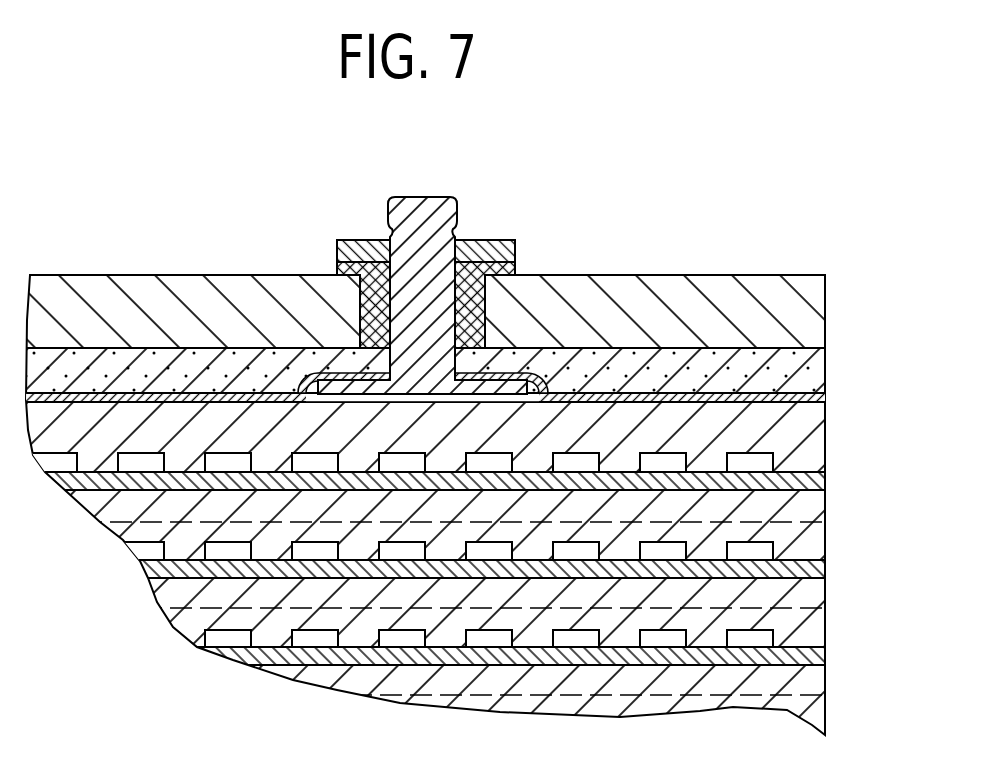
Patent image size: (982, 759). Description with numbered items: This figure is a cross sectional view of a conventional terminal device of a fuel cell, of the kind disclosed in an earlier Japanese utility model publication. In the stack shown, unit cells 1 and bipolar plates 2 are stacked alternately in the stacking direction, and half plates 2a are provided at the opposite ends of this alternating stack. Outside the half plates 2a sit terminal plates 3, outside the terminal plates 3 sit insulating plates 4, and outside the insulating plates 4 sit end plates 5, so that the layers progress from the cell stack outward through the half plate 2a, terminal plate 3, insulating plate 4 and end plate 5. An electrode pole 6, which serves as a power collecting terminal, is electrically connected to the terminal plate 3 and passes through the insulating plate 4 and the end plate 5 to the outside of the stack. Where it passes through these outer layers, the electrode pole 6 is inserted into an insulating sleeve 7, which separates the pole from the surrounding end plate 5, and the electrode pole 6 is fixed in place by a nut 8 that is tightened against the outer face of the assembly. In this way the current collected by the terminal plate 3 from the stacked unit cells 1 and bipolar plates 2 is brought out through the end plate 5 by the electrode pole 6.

The unit cell 1 is at (818, 478).
The bipolar plate 2 is at (117, 505).
The half plate 2a is at (813, 452).
The terminal plate 3 is at (818, 407).
The insulating plate 4 is at (818, 375).
The end plate 5 is at (813, 313).
The electrode pole 6 is at (413, 221).
The insulating sleeve 7 is at (478, 313).
The nut 8 is at (483, 243).